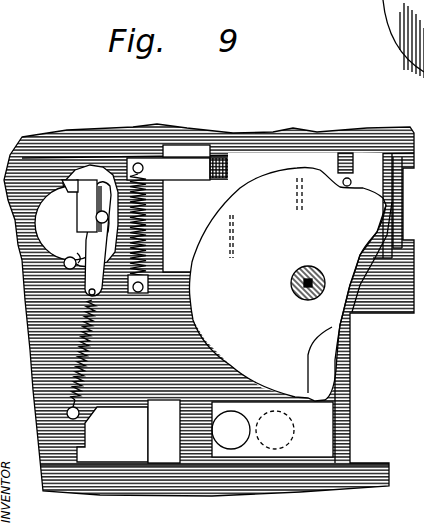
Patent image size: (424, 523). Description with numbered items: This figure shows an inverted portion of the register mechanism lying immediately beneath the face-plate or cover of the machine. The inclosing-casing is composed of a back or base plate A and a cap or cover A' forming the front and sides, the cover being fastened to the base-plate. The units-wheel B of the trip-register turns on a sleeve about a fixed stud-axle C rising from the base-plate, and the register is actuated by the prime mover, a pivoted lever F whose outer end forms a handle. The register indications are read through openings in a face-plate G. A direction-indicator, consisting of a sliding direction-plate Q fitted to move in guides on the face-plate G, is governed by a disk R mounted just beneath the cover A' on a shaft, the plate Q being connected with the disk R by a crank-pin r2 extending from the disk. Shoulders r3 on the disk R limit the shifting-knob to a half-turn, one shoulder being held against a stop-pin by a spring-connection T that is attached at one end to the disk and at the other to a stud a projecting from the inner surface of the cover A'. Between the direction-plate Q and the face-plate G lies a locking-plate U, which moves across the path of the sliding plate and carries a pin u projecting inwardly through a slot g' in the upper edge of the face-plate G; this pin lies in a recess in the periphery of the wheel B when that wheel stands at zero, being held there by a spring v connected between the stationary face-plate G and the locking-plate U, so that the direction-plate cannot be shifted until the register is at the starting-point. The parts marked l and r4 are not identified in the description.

The base plate A is at (291, 444).
The cover A' is at (209, 310).
The units-wheel B is at (287, 284).
The stud-axle C is at (274, 277).
The pivoted lever F is at (128, 431).
The face-plate G is at (338, 332).
The direction-plate Q is at (96, 216).
The disk R is at (72, 223).
The spring-connection T is at (93, 353).
The locking-plate U is at (352, 133).
The stud a is at (83, 421).
The slot g' is at (357, 167).
The lever l is at (68, 268).
The crank-pin r2 is at (92, 206).
The shoulder r3 is at (57, 180).
The pawl pin r4 is at (72, 252).
The pin u is at (350, 193).
The spring v is at (147, 242).